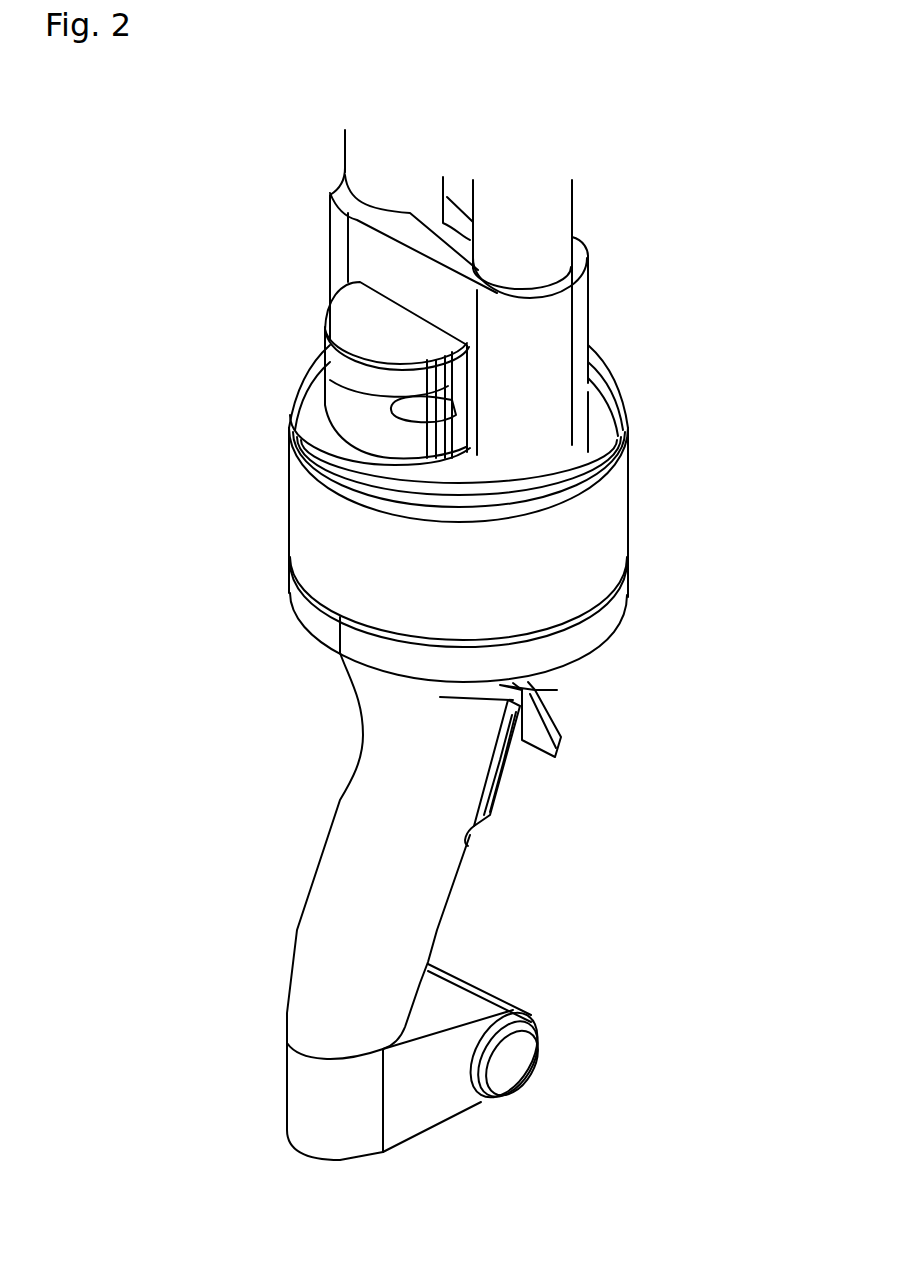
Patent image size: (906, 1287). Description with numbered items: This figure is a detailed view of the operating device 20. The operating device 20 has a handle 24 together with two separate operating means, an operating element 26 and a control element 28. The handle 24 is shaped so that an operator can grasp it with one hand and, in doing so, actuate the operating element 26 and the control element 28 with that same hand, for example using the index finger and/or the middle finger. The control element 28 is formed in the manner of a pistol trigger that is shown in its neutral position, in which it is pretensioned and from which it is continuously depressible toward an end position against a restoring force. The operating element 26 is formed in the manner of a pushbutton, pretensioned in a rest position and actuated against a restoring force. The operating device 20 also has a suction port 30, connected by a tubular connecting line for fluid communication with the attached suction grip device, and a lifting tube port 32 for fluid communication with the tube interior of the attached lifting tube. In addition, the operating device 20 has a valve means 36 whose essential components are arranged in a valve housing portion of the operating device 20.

The operating device 20 is at (642, 965).
The handle 24 is at (313, 987).
The operating element 26 is at (547, 733).
The control element 28 is at (500, 803).
The suction port 30 is at (545, 220).
The lifting tube port 32 is at (395, 158).
The valve means 36 is at (315, 532).